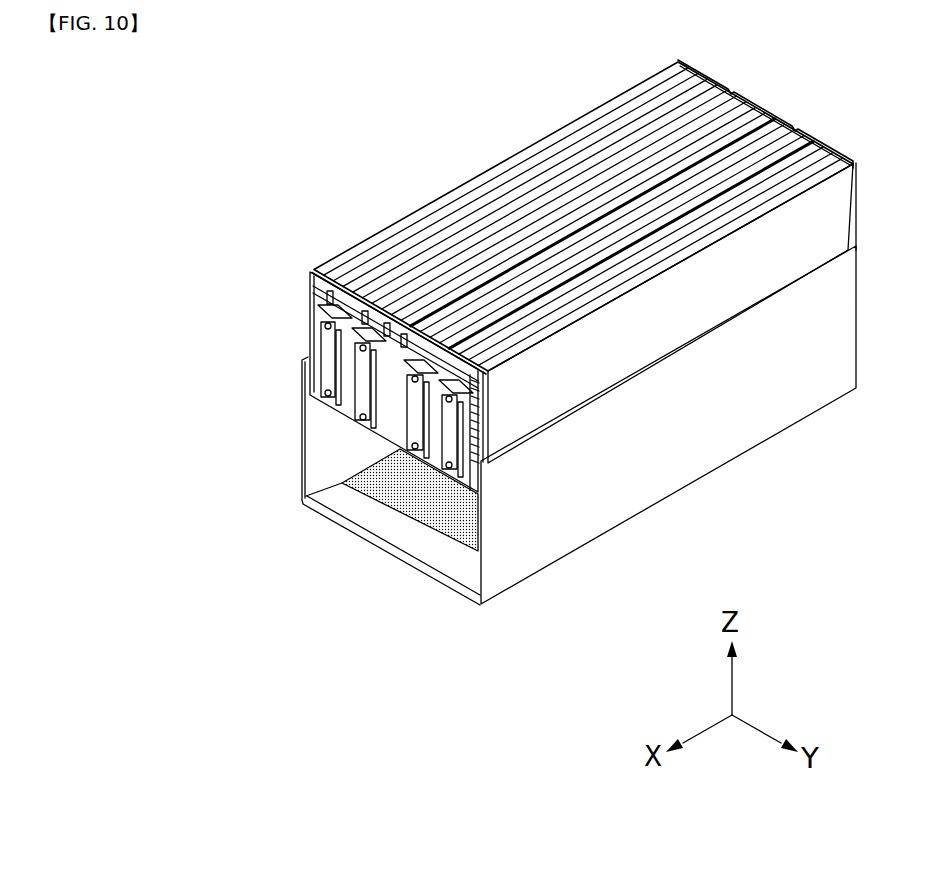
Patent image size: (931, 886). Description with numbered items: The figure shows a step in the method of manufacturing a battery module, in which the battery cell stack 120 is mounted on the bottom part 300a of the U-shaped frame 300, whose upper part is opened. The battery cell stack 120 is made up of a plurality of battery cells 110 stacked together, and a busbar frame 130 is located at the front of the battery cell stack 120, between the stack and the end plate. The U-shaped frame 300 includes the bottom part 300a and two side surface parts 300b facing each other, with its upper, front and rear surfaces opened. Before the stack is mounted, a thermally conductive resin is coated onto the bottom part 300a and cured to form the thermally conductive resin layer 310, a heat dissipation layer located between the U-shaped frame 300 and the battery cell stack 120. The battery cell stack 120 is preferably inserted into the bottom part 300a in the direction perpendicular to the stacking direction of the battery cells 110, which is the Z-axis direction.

The battery cell 110 is at (660, 333).
The battery cell stack 120 is at (481, 203).
The busbar frame 130 is at (292, 328).
The U-shaped frame 300 is at (579, 490).
The bottom part 300a is at (431, 548).
The side surface part 300b is at (515, 545).
The thermally conductive resin layer 310 is at (408, 503).